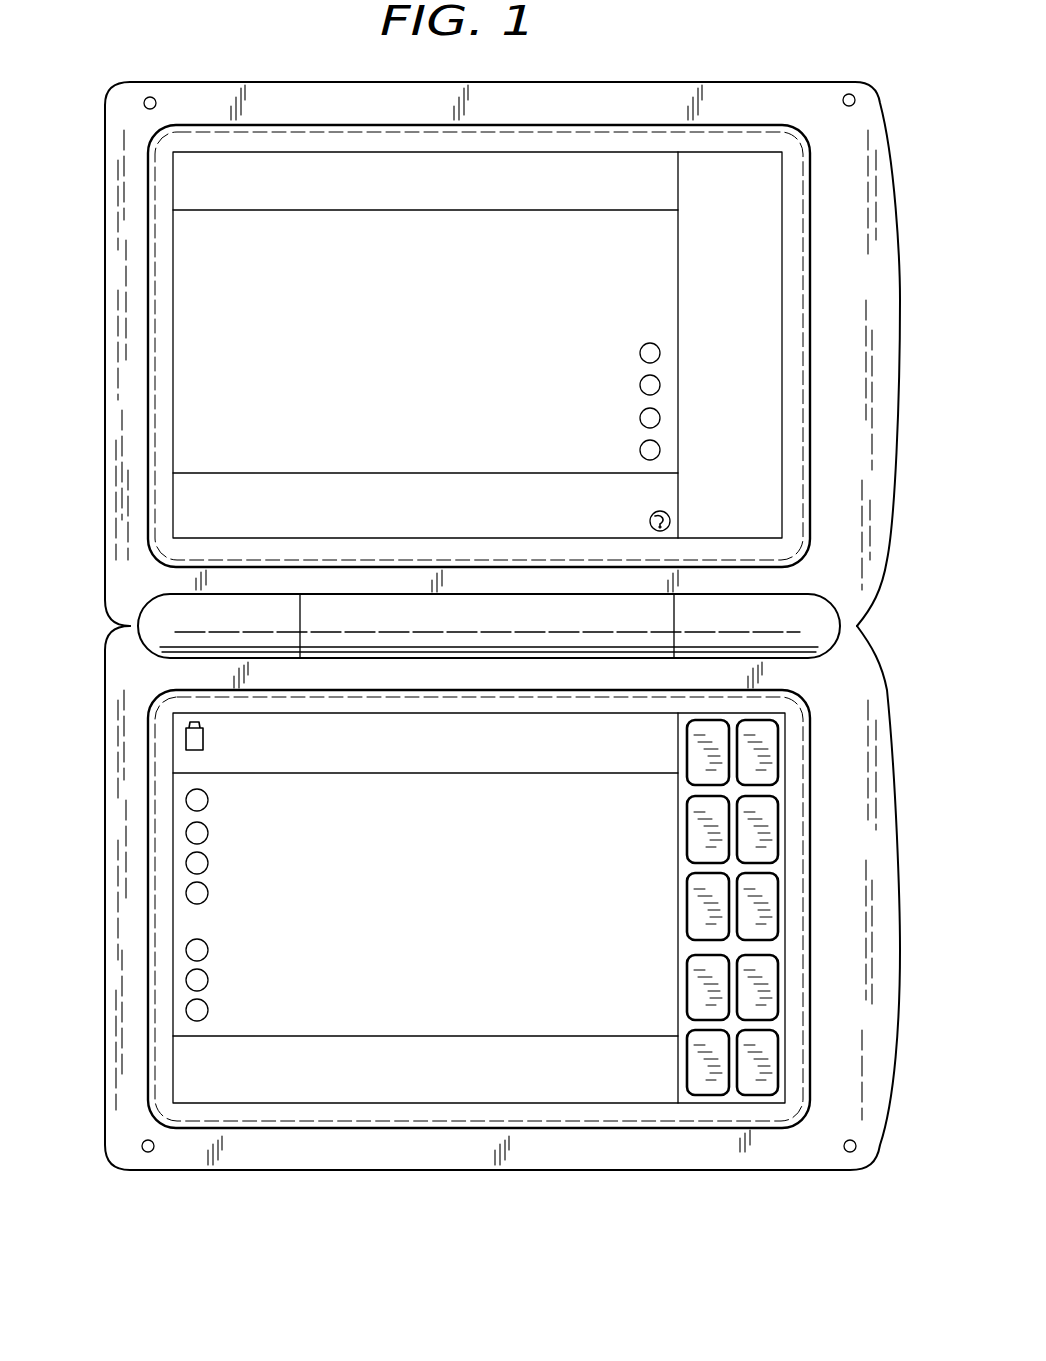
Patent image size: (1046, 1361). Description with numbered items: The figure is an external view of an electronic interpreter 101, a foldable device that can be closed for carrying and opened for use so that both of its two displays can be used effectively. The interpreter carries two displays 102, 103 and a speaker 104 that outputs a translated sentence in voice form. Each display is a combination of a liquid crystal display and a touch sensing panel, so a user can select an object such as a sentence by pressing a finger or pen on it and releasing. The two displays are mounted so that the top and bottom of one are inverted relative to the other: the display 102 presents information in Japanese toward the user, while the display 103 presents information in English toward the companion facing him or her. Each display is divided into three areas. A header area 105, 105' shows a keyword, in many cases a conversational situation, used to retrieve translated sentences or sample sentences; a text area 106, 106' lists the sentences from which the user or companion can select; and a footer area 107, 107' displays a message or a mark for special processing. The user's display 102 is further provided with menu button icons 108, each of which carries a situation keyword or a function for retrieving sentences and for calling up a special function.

The electronic interpreter 101 is at (108, 95).
The display 102 is at (600, 1008).
The display 103 is at (665, 248).
The speaker 104 is at (857, 583).
The header area 105 is at (366, 747).
The header area 105' is at (362, 503).
The text area 106 is at (350, 906).
The text area 106' is at (353, 369).
The footer area 107 is at (366, 1080).
The footer area 107' is at (362, 177).
The menu button icons 108 is at (722, 1085).